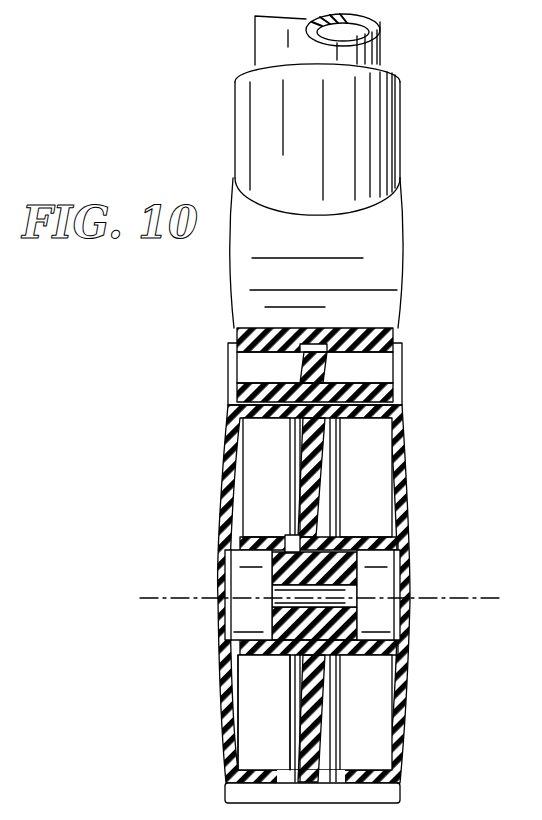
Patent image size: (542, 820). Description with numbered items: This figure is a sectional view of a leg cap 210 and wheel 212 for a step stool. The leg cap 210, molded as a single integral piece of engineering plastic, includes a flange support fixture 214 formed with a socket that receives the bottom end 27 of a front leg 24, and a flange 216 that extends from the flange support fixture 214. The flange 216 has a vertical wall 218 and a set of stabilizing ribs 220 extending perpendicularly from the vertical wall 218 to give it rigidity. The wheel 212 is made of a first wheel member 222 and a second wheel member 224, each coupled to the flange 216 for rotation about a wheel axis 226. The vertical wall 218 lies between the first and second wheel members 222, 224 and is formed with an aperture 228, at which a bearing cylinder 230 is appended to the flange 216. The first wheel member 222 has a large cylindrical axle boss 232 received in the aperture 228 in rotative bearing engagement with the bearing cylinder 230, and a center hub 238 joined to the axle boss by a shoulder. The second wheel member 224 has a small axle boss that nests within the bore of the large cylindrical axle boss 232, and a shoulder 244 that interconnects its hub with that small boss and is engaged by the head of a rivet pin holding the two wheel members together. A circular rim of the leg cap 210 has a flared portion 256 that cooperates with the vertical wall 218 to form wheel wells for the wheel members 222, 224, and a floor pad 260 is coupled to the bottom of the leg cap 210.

The front leg 24 is at (392, 40).
The bottom end 27 is at (372, 58).
The flange support fixture 214 is at (278, 143).
The leg cap 210 is at (425, 168).
The vertical wall 218 is at (310, 366).
The stabilizing ribs 220 is at (240, 338).
The flange 216 is at (317, 360).
The flared portion 256 is at (367, 390).
The wheel 212 is at (421, 411).
The first wheel member 222 is at (223, 494).
The second wheel member 224 is at (405, 490).
The shoulder 244 is at (293, 540).
The aperture 228 is at (318, 535).
The wheel axis 226 is at (427, 595).
The large cylindrical axle boss 232 is at (277, 617).
The center hub 238 is at (222, 700).
The bearing cylinder 230 is at (325, 662).
The floor pad 260 is at (397, 793).